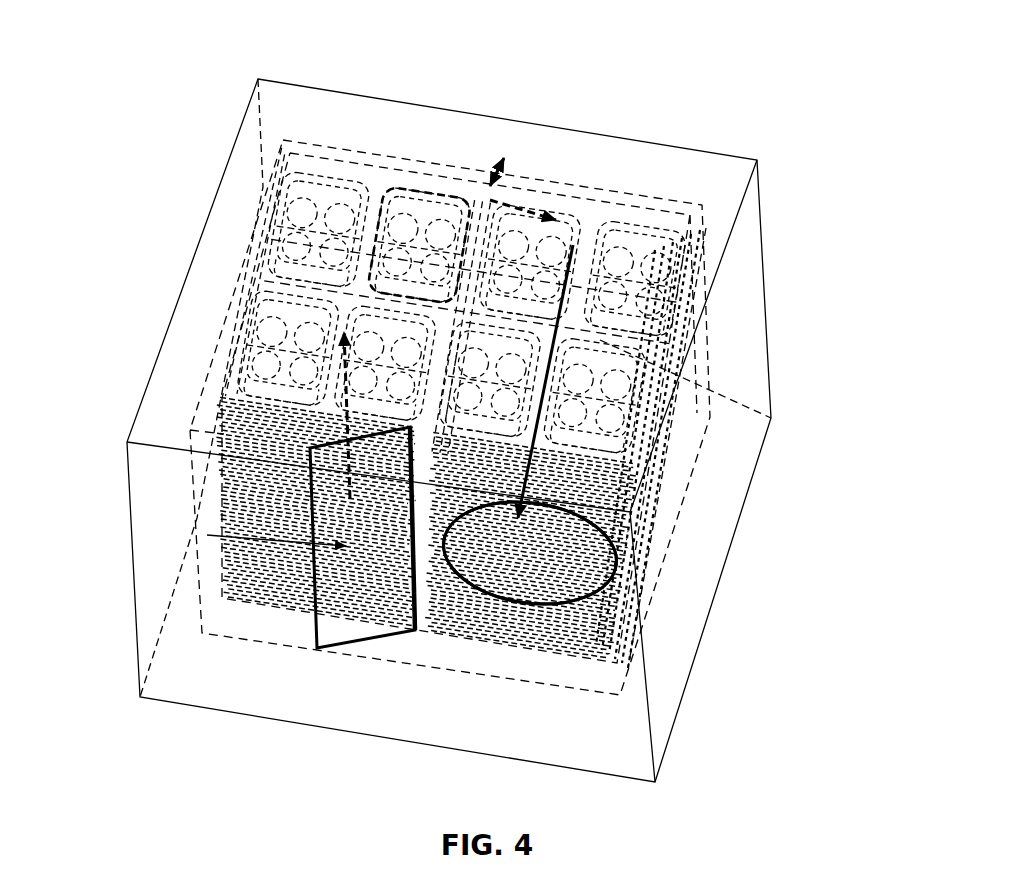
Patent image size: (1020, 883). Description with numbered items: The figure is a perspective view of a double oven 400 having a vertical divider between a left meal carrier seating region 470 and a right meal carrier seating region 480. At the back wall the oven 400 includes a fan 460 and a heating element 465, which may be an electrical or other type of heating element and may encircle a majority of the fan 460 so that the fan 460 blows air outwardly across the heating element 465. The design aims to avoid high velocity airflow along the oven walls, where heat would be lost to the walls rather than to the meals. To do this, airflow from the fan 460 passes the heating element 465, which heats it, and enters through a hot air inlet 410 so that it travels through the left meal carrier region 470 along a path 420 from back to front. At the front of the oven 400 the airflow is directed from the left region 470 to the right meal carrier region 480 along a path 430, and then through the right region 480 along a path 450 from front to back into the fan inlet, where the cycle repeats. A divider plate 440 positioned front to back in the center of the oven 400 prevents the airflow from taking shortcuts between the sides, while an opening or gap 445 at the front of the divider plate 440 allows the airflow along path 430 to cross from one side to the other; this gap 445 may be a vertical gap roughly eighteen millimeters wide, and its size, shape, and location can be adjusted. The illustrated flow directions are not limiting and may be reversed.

The double oven 400 is at (836, 97).
The hot air inlet 410 is at (237, 553).
The path 420 is at (345, 383).
The path 430 is at (413, 195).
The divider plate 440 is at (460, 237).
The opening or gap 445 is at (520, 170).
The path 450 is at (560, 323).
The fan 460 is at (560, 560).
The heating element 465 is at (560, 560).
The left meal carrier seating region 470 is at (352, 132).
The right meal carrier seating region 480 is at (672, 190).